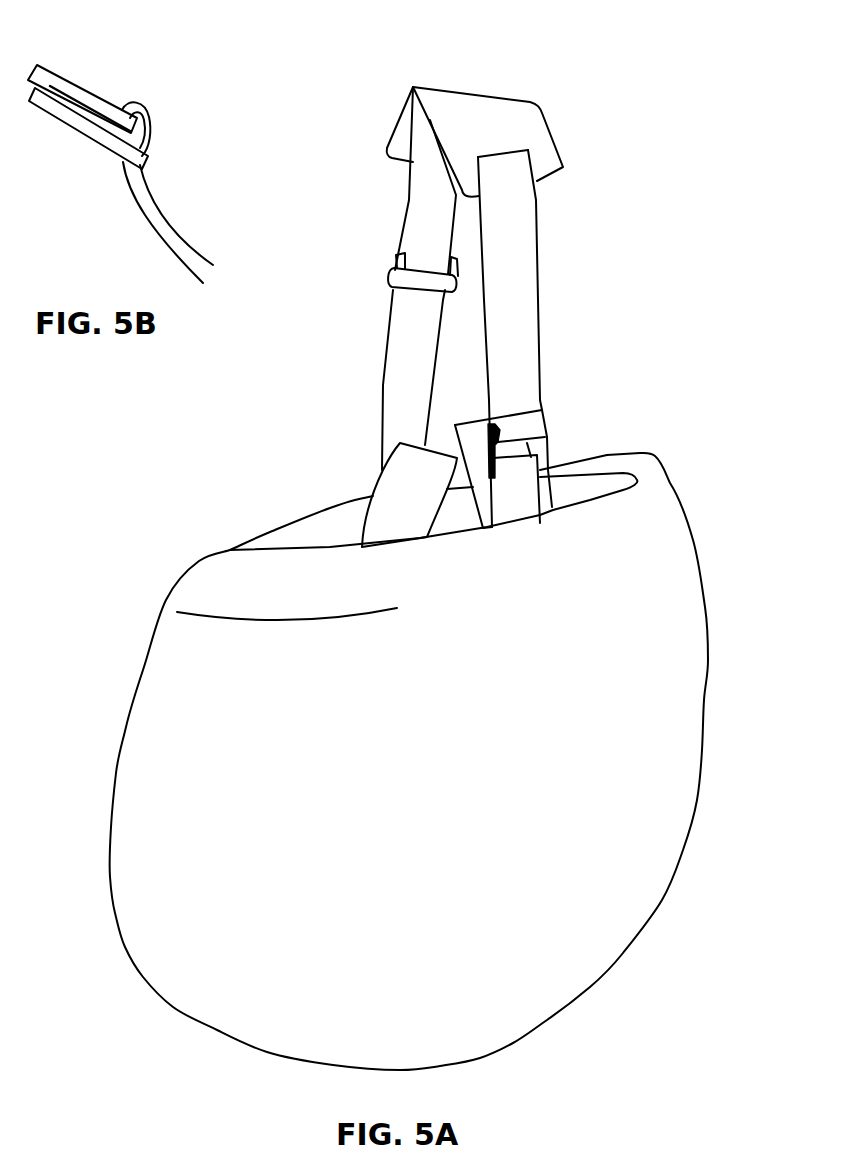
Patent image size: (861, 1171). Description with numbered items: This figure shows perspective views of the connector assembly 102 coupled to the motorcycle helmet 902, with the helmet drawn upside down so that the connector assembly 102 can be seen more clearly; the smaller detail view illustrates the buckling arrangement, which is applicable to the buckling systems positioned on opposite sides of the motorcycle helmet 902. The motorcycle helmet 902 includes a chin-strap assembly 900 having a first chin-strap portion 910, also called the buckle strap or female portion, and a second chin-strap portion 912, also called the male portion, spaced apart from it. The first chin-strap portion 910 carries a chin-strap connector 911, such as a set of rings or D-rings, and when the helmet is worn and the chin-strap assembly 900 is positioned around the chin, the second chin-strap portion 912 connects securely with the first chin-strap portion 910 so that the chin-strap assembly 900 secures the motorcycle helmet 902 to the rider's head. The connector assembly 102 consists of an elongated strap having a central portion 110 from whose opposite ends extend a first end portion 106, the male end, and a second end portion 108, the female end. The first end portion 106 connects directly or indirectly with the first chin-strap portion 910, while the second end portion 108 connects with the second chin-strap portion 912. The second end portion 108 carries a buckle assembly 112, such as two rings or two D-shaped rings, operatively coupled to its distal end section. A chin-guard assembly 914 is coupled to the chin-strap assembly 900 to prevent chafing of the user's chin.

In FIG. 5A, the connector assembly 102 is at (712, 197).
In FIG. 5A, the first end portion 106 is at (540, 230).
In FIG. 5B, the second end portion 108 is at (173, 230).
In FIG. 5A, the second end portion 108 is at (407, 227).
In FIG. 5A, the central portion 110 is at (478, 89).
In FIG. 5B, the buckle assembly 112 is at (88, 90).
In FIG. 5A, the buckle assembly 112 is at (396, 262).
In FIG. 5A, the chin-strap assembly 900 is at (757, 408).
In FIG. 5A, the motorcycle helmet 902 is at (433, 941).
In FIG. 5A, the first chin-strap portion 910 is at (603, 455).
In FIG. 5A, the chin-strap connector 911 is at (552, 458).
In FIG. 5A, the second chin-strap portion 912 is at (383, 385).
In FIG. 5A, the chin-guard assembly 914 is at (383, 495).